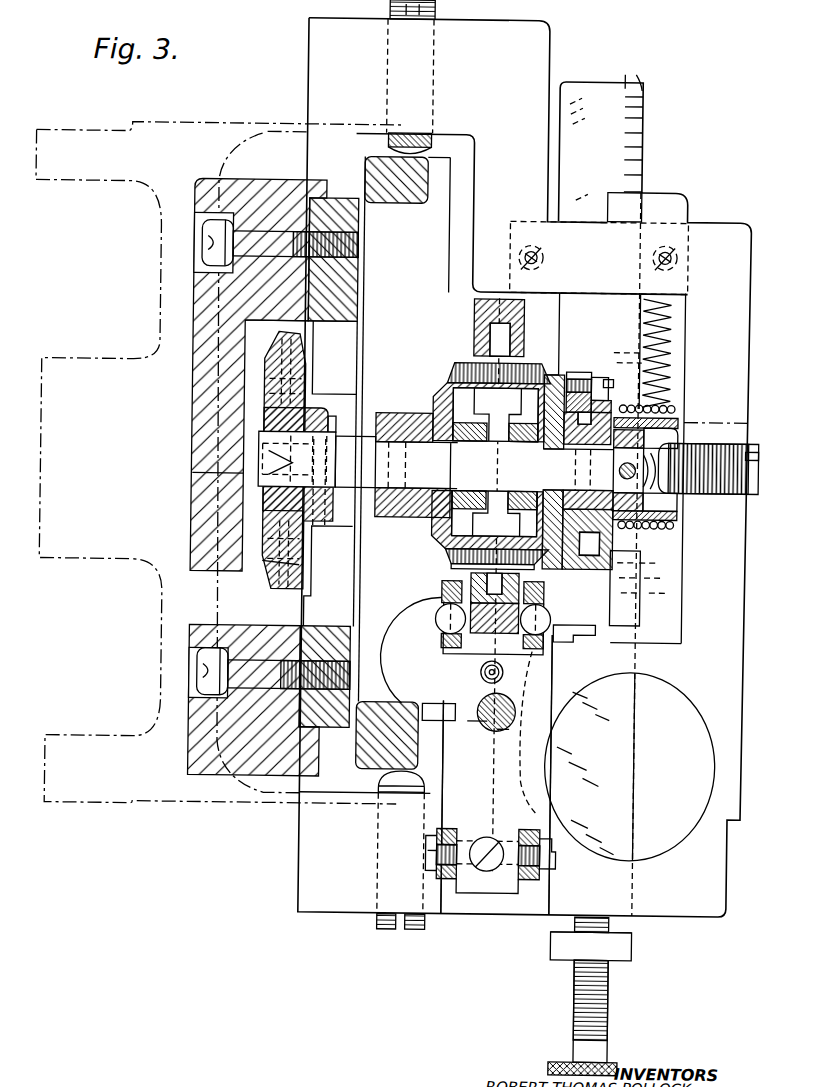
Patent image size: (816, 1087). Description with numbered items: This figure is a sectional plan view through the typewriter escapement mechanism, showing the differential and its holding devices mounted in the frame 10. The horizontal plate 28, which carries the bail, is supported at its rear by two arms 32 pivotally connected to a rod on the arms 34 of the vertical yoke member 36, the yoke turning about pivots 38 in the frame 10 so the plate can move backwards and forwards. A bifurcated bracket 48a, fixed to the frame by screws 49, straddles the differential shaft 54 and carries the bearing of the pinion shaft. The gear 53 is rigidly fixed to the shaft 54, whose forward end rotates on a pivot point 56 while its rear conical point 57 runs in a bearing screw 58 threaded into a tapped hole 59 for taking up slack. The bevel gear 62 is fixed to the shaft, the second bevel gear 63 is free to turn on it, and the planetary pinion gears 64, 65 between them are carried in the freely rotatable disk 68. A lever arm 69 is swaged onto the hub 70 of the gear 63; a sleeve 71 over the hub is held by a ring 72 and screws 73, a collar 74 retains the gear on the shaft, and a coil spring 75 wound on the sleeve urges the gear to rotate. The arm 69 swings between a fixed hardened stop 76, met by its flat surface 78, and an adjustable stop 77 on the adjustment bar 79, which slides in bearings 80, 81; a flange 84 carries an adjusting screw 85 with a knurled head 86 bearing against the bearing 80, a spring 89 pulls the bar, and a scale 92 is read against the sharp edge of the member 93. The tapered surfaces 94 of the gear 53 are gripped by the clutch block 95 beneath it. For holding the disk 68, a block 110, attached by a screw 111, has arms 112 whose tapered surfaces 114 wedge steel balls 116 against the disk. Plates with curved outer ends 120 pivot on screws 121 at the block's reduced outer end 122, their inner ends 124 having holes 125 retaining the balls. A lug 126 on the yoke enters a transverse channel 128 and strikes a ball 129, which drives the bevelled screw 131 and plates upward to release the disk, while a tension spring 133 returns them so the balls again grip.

The frame 10 is at (200, 754).
The plate 28 is at (80, 360).
The arms 32 is at (283, 124).
The arms 34 is at (403, 194).
The yoke member 36 is at (438, 226).
The pivots 38 is at (377, 148).
The bifurcated bracket 48a is at (338, 303).
The screws 49 is at (203, 253).
The gear 53 is at (263, 547).
The shaft 54 is at (388, 433).
The pivot point 56 is at (247, 462).
The conical point 57 is at (645, 498).
The bearing screw 58 is at (707, 443).
The tapped hole 59 is at (742, 492).
The bevel gear 62 is at (435, 385).
The second bevel gear 63 is at (555, 372).
The planetary pinion gear 64 is at (462, 370).
The planetary pinion gear 65 is at (448, 556).
The disk 68 is at (490, 300).
The lever arm 69 is at (583, 372).
The hub 70 is at (605, 540).
The sleeve 71 is at (610, 388).
The ring 72 is at (590, 382).
The screws 73 is at (612, 352).
The collar 74 is at (641, 528).
The coil spring 75 is at (660, 405).
The stop 76 is at (585, 633).
The stop 77 is at (578, 370).
The flat surface 78 is at (586, 604).
The adjustment bar 79 is at (645, 142).
The bearing 80 is at (615, 927).
The bearing 81 is at (630, 248).
The flange 84 is at (622, 958).
The adjusting screw 85 is at (581, 1014).
The knurled head 86 is at (552, 1070).
The spring 89 is at (660, 332).
The scale 92 is at (627, 71).
The member 93 is at (640, 192).
The surfaces 94 is at (268, 587).
The block 95 is at (250, 407).
The block 110 is at (497, 774).
The screw 111 is at (490, 870).
The arms 112 is at (413, 602).
The tapered surfaces 114 is at (440, 600).
The steel balls 116 is at (453, 612).
The outer ends 120 is at (527, 878).
The pivot screws 121 is at (558, 870).
The outer end 122 is at (468, 883).
The inner ends 124 is at (443, 588).
The holes 125 is at (528, 640).
The lug 126 is at (447, 703).
The transverse channel 128 is at (520, 712).
The ball 129 is at (478, 725).
The screw 131 is at (508, 735).
The tension spring 133 is at (473, 674).